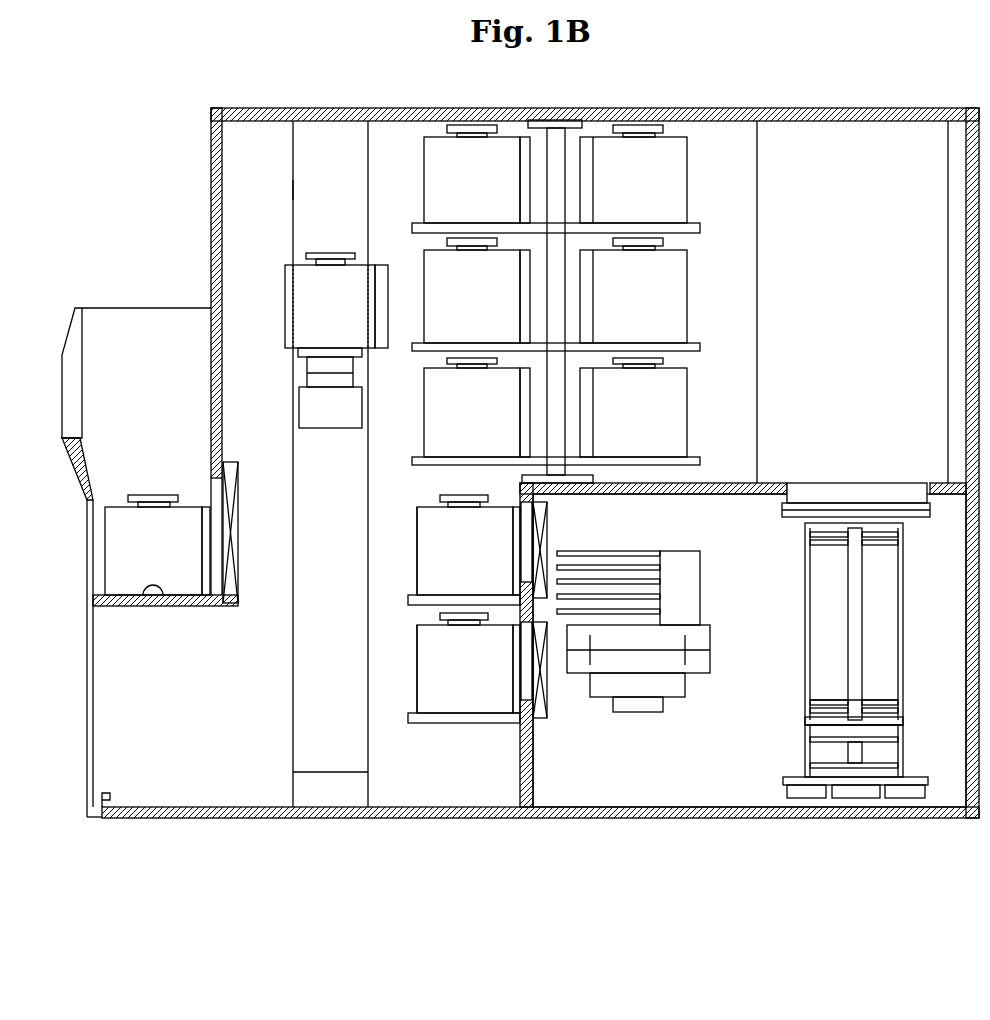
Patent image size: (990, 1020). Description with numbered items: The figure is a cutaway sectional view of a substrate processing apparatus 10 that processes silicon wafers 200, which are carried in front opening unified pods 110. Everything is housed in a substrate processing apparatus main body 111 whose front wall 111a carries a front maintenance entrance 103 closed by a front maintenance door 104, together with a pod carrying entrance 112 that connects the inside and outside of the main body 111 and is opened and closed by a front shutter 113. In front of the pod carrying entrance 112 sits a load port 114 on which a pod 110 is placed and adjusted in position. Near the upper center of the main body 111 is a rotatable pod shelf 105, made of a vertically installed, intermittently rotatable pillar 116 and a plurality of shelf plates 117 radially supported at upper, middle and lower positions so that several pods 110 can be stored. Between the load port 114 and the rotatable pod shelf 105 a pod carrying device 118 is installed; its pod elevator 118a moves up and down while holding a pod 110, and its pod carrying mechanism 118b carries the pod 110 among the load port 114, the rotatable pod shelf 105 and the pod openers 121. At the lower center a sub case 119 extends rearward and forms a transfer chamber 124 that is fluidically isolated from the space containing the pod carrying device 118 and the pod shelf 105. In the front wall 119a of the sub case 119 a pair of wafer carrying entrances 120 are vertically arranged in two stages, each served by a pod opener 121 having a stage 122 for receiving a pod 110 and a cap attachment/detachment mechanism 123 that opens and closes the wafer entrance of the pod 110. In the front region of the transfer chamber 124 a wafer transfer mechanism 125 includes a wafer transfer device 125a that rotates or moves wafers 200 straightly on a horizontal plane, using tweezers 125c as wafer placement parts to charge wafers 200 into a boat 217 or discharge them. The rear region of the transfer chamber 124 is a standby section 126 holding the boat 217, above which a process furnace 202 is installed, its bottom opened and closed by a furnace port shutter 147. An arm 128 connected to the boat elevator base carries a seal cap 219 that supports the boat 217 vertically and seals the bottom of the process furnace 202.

The substrate processing apparatus 10 is at (917, 86).
The front maintenance entrance 103 is at (87, 691).
The front maintenance door 104 is at (102, 810).
The rotatable pod shelf 105 is at (692, 188).
The pod 110 is at (424, 172).
The substrate processing apparatus main body 111 is at (435, 104).
The front wall 111a is at (211, 211).
The pod carrying entrance 112 is at (212, 480).
The front shutter 113 is at (238, 540).
The load port 114 is at (150, 606).
The pillar 116 is at (555, 140).
The shelf plate 117 is at (432, 236).
The pod carrying device 118 is at (336, 118).
The pod elevator 118a is at (293, 190).
The pod carrying mechanism 118b is at (312, 412).
The sub case 119 is at (712, 483).
The front wall of sub case 119a is at (520, 785).
The wafer carrying entrance 120 is at (525, 535).
The pod opener 121 is at (406, 503).
The stage 122 is at (412, 606).
The cap attachment/detachment mechanism 123 is at (547, 520).
The transfer chamber 124 is at (660, 519).
The wafer transfer mechanism 125 is at (660, 735).
The wafer transfer device 125a is at (700, 542).
The tweezers 125c is at (585, 542).
The standby section 126 is at (966, 665).
The arm 128 is at (783, 790).
The furnace port shutter 147 is at (932, 517).
The wafer 200 is at (805, 700).
The process furnace 202 is at (757, 283).
The boat 217 is at (903, 600).
The seal cap 219 is at (795, 777).